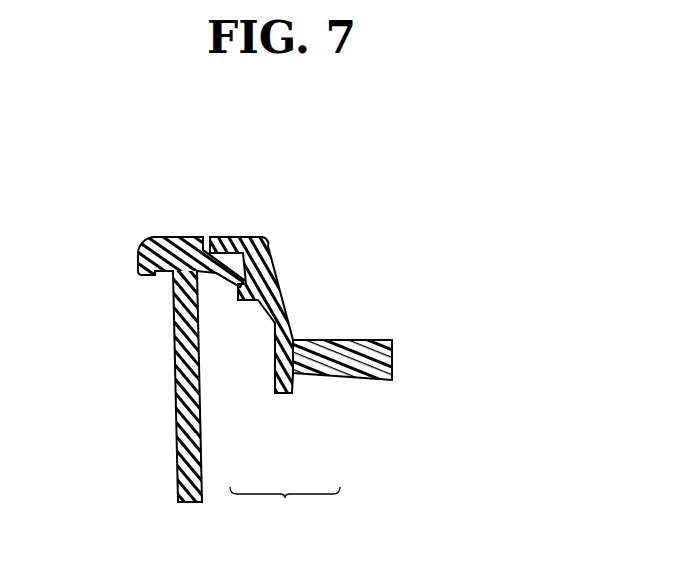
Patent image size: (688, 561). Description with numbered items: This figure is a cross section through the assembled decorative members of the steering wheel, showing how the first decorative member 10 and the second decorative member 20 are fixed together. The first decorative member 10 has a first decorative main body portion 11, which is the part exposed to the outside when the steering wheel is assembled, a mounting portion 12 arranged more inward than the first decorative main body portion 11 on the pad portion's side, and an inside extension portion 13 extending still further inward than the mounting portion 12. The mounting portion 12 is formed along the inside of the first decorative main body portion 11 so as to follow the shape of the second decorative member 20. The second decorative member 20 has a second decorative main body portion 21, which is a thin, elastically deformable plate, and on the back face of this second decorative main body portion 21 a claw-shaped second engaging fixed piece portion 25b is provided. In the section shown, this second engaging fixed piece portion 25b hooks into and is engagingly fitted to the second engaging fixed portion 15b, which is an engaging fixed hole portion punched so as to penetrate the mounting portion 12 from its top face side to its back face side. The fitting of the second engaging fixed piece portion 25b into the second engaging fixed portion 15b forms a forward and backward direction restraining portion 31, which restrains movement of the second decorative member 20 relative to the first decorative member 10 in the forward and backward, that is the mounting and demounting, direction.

The first decorative member 10 is at (167, 319).
The first decorative main body portion 11 is at (173, 239).
The mounting portion 12 is at (237, 237).
The inside extension portion 13 is at (393, 372).
The second decorative member 20 is at (299, 330).
The second decorative main body portion 21 is at (264, 238).
The second engaging fixed piece portion 25b is at (240, 303).
The second engaging fixed portion 15b is at (255, 322).
The forward and backward direction restraining portion 31 is at (285, 507).